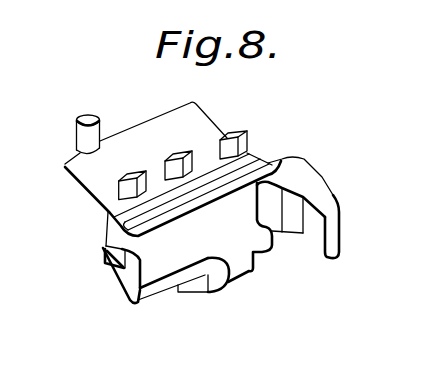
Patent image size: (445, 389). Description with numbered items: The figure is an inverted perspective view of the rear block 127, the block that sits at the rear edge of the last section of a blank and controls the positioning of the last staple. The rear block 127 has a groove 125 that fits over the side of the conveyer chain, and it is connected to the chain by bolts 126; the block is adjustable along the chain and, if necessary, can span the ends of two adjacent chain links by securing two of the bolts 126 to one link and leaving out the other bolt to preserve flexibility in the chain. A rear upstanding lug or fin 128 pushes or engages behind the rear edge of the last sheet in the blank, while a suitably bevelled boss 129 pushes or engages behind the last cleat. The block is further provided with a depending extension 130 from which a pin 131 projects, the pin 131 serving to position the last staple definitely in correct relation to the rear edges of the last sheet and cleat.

The groove 125 is at (121, 256).
The bolts 126 is at (174, 160).
The rear block 127 is at (198, 242).
The rear upstanding lug or fin 128 is at (325, 202).
The bevelled boss 129 is at (202, 288).
The depending extension 130 is at (90, 167).
The pin 131 is at (88, 115).